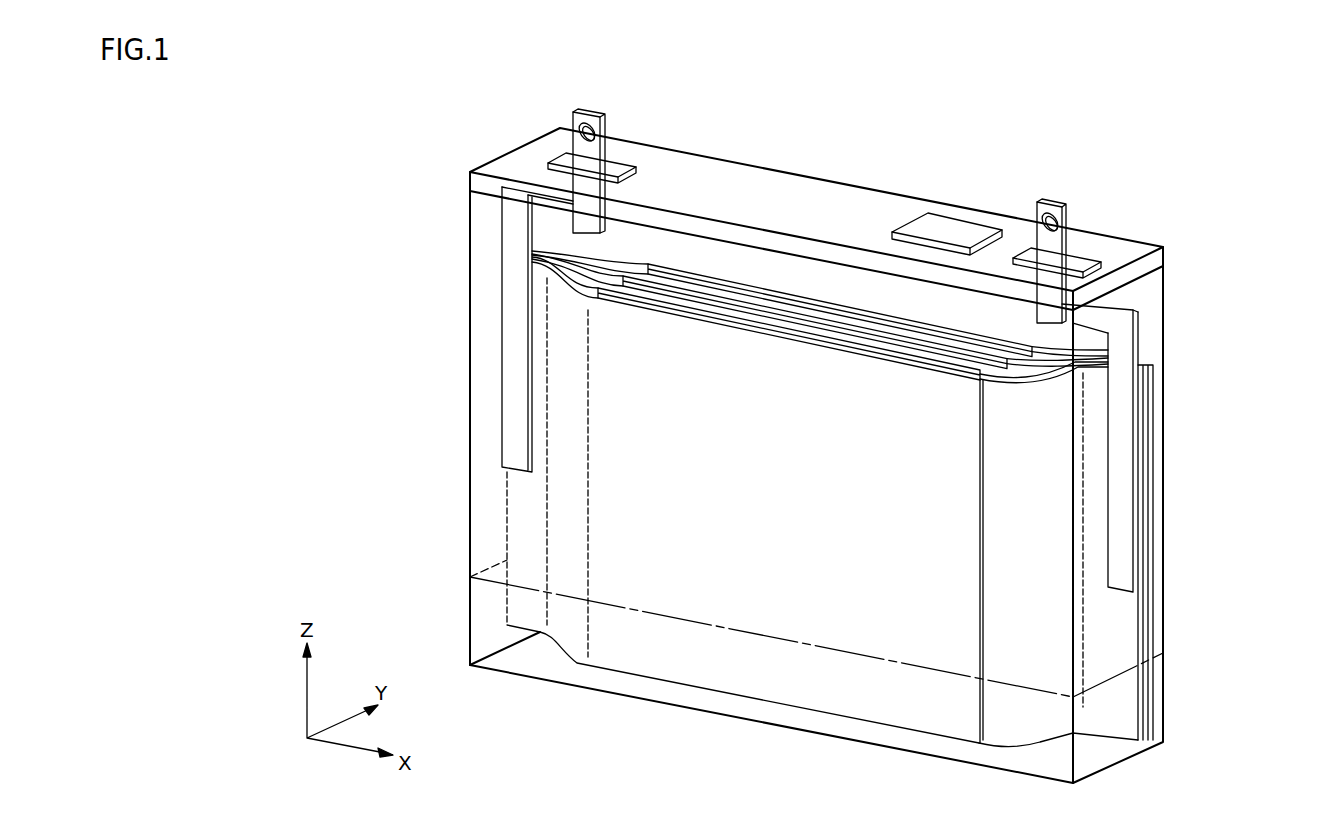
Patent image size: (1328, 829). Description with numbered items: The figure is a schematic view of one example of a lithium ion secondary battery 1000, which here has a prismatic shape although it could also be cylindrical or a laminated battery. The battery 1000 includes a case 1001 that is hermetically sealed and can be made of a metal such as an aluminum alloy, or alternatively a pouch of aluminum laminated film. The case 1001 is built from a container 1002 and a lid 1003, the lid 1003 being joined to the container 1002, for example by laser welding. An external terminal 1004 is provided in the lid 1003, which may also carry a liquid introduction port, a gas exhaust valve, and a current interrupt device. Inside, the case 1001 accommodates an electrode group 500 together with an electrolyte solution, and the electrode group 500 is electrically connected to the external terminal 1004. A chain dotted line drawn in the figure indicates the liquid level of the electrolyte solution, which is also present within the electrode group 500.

The battery 1000 is at (1024, 82).
The case 1001 is at (1247, 254).
The container 1002 is at (1163, 304).
The lid 1003 is at (1163, 259).
The external terminal 1004 is at (593, 113).
The electrode group 500 is at (603, 463).